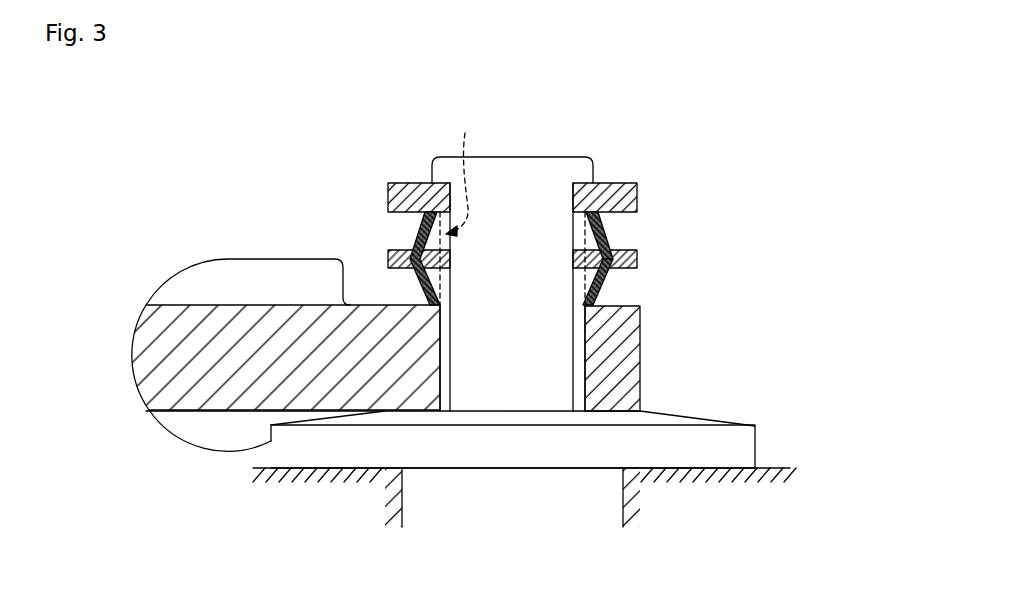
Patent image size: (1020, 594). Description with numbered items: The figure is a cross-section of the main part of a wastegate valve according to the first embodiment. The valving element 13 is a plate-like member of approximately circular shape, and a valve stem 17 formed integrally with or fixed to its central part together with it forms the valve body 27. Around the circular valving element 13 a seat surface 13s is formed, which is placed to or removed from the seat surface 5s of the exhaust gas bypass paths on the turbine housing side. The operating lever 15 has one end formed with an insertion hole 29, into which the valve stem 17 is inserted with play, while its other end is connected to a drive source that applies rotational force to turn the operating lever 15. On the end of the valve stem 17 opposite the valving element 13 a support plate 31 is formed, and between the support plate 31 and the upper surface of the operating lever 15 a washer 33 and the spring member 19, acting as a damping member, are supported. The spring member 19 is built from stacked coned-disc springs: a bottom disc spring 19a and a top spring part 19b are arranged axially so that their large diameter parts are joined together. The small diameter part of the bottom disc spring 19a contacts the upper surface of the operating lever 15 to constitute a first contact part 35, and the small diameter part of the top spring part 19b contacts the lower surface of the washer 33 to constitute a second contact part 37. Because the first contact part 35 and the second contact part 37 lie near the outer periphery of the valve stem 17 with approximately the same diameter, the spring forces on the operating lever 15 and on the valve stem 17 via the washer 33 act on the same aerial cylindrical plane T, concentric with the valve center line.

The seat surface 5s is at (683, 468).
The valving element 13 is at (549, 446).
The seat surface 13s is at (730, 472).
The operating lever 15 is at (238, 382).
The valve stem 17 is at (555, 367).
The spring member 19 is at (680, 264).
The bottom disc spring 19a is at (647, 282).
The top spring part 19b is at (603, 228).
The valve body 27 is at (519, 325).
The insertion hole 29 is at (441, 378).
The support plate 31 is at (590, 158).
The washer 33 is at (637, 200).
The first contact part 35 is at (603, 318).
The second contact part 37 is at (424, 221).
The aerial cylindrical plane T is at (459, 170).